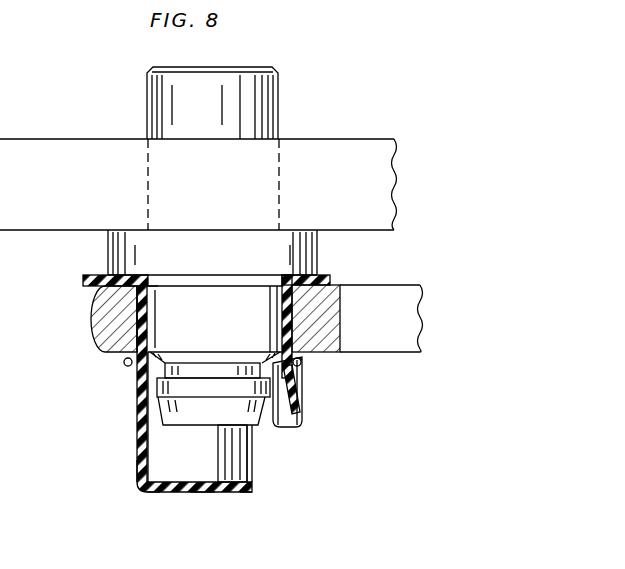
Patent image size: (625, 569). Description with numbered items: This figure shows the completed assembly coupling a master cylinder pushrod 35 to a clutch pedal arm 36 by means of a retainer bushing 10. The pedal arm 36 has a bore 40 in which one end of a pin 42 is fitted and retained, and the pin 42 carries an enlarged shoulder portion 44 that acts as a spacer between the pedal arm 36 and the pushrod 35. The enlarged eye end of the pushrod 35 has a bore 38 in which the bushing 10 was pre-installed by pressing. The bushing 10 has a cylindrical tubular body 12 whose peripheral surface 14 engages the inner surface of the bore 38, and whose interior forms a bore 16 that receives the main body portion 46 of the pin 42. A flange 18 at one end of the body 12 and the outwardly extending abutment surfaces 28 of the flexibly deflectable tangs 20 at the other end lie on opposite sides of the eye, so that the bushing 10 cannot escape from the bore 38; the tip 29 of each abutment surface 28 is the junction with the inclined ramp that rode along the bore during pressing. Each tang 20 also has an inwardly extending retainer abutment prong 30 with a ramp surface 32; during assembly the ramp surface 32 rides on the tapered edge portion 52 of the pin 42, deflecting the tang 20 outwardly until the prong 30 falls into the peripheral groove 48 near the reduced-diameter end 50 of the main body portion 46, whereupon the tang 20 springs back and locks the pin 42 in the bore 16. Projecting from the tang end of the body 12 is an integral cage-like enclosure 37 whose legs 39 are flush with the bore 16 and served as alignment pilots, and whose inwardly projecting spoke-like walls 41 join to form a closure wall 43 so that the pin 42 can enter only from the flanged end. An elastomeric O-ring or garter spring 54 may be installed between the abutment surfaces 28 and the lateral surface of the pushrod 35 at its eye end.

The retainer bushing 10 is at (126, 375).
The cylindrical tubular body 12 is at (139, 375).
The cylindrical peripheral surface 14 is at (132, 338).
The bore 16 is at (136, 312).
The flange 18 is at (92, 282).
The tang 20 is at (300, 407).
The abutment surface 28 is at (302, 362).
The tip 29 is at (303, 367).
The retainer abutment prong 30 is at (272, 325).
The ramp surface 32 is at (280, 361).
The pushrod 35 is at (378, 296).
The clutch pedal arm 36 is at (354, 148).
The cage-like enclosure 37 is at (250, 494).
The bore 38 is at (146, 291).
The legs 39 is at (140, 465).
The bore 40 is at (158, 185).
The spoke-like cross-member or wall 41 is at (162, 493).
The pin 42 is at (284, 87).
The closure wall 43 is at (205, 494).
The enlarged shoulder portion 44 is at (297, 234).
The main body portion 46 is at (272, 313).
The peripheral groove 48 is at (180, 370).
The end 50 is at (163, 387).
The frusto-conical or tapered edge portion 52 is at (206, 419).
The elastomeric O-ring or garter spring 54 is at (124, 363).